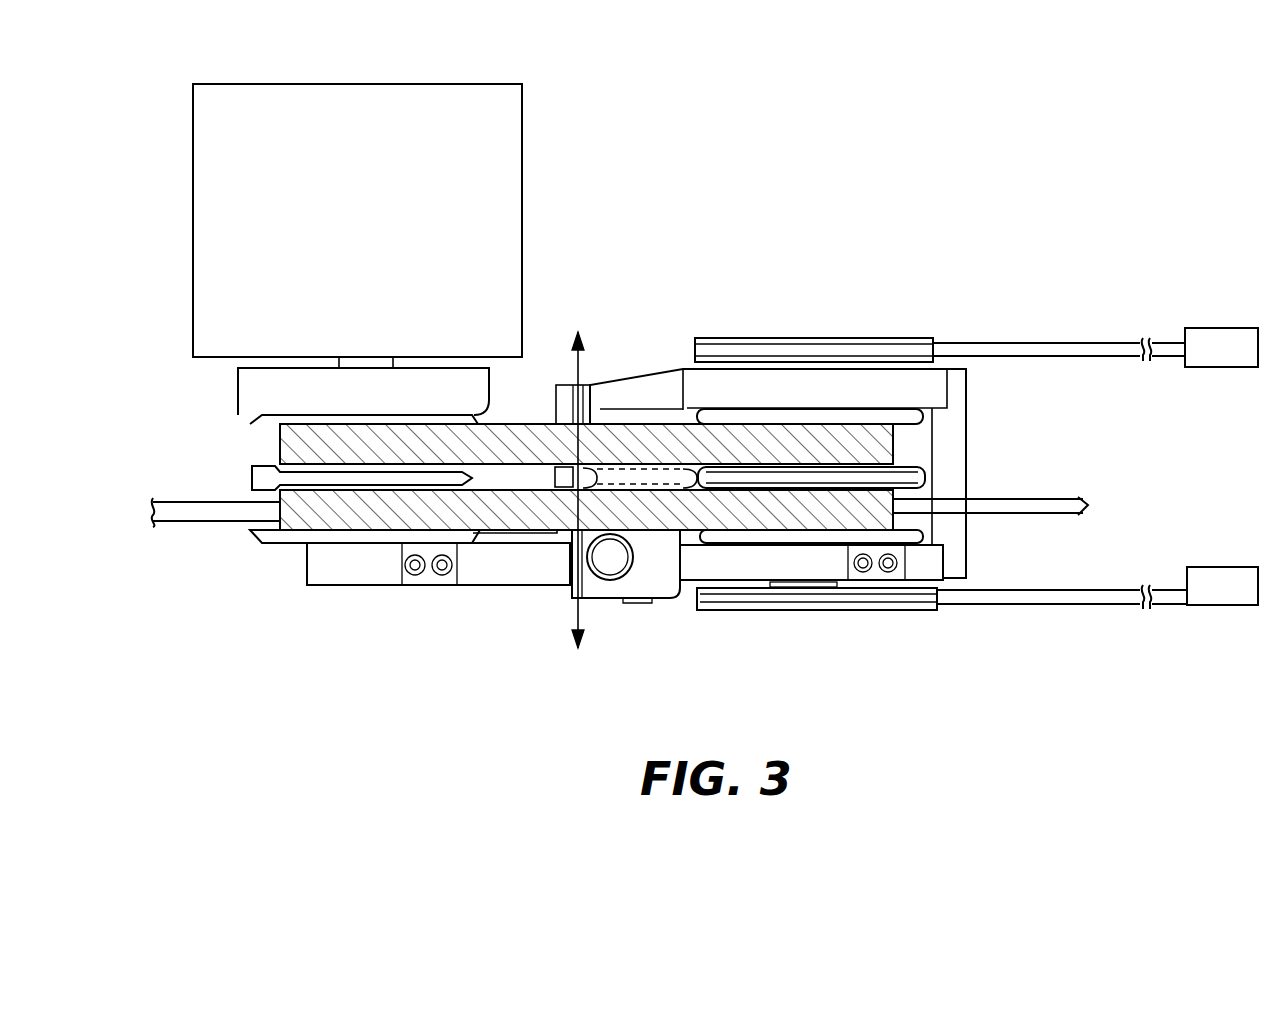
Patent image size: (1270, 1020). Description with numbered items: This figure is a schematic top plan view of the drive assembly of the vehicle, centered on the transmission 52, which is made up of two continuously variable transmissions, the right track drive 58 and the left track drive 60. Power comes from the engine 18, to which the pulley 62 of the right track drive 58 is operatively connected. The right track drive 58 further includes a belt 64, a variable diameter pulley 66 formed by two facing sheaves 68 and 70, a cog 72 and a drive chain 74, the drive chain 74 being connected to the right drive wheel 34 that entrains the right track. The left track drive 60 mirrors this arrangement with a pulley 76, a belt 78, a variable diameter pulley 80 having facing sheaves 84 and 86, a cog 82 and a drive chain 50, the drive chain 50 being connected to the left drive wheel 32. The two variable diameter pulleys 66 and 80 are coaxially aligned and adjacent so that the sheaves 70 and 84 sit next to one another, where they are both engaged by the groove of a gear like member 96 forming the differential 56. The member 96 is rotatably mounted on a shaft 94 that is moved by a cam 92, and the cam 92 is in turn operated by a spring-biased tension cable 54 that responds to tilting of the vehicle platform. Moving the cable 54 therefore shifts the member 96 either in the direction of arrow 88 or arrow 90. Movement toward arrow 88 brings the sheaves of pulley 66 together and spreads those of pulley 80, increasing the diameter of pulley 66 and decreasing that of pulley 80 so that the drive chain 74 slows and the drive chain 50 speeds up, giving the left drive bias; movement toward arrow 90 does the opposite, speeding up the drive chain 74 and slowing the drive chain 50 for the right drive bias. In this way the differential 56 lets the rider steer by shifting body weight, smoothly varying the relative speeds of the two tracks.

The engine 18 is at (203, 180).
The left drive wheel 32 is at (1215, 578).
The right drive wheel 34 is at (1215, 332).
The drive chain 50 is at (1087, 595).
The transmission 52 is at (725, 655).
The tension cable 54 is at (160, 475).
The differential 56 is at (630, 483).
The right track drive 58 is at (1004, 423).
The left track drive 60 is at (1012, 570).
The pulley 62 is at (260, 415).
The belt 64 is at (520, 437).
The variable diameter pulley 66 is at (966, 416).
The sheave 68 is at (743, 417).
The sheave 70 is at (828, 460).
The cog 72 is at (927, 338).
The drive chain 74 is at (1100, 340).
The pulley 76 is at (258, 540).
The belt 78 is at (500, 523).
The variable diameter pulley 80 is at (955, 580).
The cog 82 is at (883, 612).
The sheave 84 is at (950, 498).
The sheave 86 is at (705, 600).
The arrow 88 is at (573, 477).
The arrow 90 is at (578, 653).
The cam 92 is at (610, 560).
The shaft 94 is at (645, 425).
The gear like member 96 is at (610, 478).